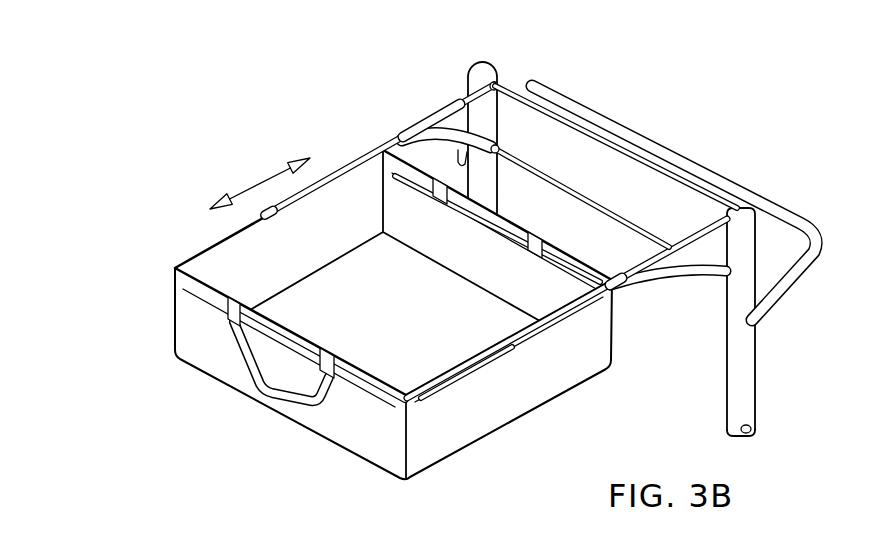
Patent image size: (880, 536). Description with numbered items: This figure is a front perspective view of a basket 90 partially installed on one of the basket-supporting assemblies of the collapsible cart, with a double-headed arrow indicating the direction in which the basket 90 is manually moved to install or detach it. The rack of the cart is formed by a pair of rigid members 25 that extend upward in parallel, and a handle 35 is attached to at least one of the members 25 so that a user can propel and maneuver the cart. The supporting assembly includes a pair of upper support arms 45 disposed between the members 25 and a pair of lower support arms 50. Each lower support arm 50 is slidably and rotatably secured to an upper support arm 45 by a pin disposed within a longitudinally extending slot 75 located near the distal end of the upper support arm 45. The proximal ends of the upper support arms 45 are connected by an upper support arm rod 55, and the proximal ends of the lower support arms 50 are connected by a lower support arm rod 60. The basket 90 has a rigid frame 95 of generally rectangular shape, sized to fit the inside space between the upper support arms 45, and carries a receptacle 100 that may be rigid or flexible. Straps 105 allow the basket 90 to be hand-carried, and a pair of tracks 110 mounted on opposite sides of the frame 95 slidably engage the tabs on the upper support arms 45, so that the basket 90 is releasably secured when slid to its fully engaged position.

The rigid members 25 is at (480, 68).
The handle 35 is at (591, 108).
The upper support arms 45 is at (408, 130).
The lower support arms 50 is at (692, 272).
The upper support arm rod 55 is at (632, 163).
The lower support arm rod 60 is at (580, 193).
The slot 75 is at (580, 310).
The basket 90 is at (125, 288).
The frame 95 is at (177, 277).
The receptacle 100 is at (190, 355).
The straps 105 is at (268, 387).
The tracks 110 is at (458, 377).